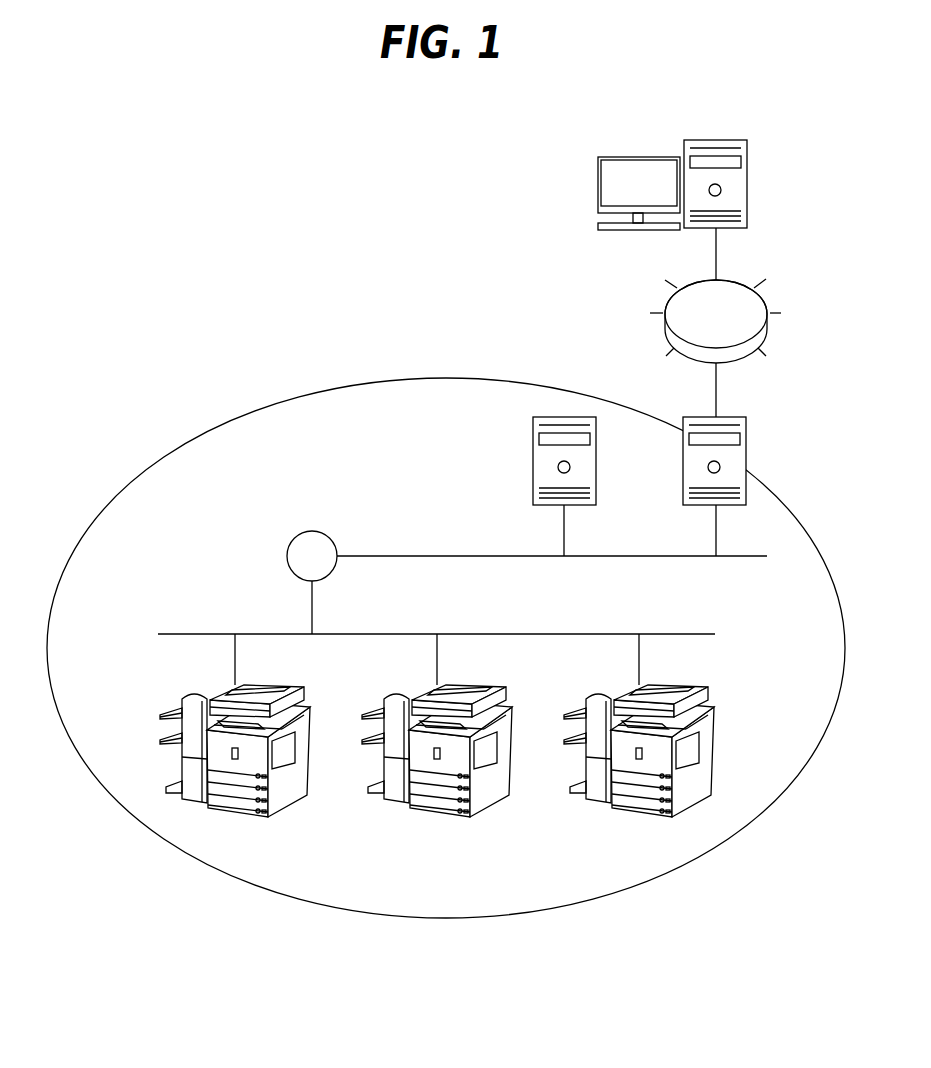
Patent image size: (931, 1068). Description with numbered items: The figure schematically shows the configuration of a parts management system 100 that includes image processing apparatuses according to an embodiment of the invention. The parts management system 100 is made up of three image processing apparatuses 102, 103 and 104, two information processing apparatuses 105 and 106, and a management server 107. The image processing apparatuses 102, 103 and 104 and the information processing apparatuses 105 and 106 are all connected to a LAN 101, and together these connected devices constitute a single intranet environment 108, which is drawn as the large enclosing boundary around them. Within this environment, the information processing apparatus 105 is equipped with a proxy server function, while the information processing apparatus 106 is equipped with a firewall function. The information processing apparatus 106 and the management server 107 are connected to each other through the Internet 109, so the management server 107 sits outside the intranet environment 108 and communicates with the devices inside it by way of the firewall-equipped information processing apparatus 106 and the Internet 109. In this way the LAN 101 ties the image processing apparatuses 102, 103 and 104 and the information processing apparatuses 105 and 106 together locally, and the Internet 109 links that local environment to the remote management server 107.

The parts management system 100 is at (85, 271).
The LAN 101 is at (302, 532).
The image processing apparatus 102 is at (237, 813).
The image processing apparatus 103 is at (440, 812).
The image processing apparatus 104 is at (640, 812).
The information processing apparatus 105 is at (532, 460).
The information processing apparatus 106 is at (747, 448).
The management server 107 is at (717, 138).
The intranet environment 108 is at (377, 382).
The Internet 109 is at (765, 298).